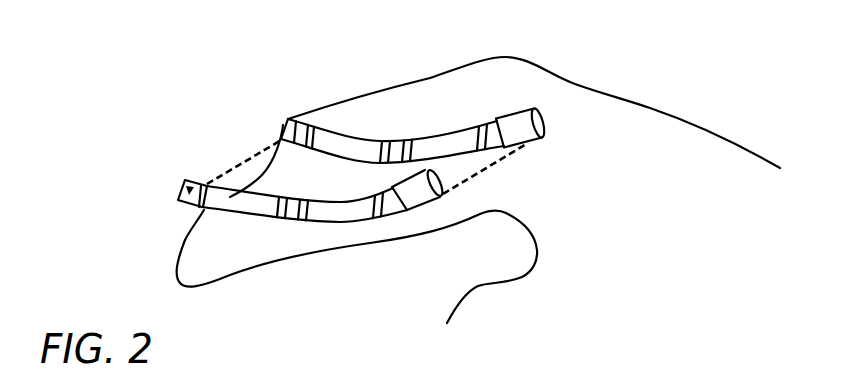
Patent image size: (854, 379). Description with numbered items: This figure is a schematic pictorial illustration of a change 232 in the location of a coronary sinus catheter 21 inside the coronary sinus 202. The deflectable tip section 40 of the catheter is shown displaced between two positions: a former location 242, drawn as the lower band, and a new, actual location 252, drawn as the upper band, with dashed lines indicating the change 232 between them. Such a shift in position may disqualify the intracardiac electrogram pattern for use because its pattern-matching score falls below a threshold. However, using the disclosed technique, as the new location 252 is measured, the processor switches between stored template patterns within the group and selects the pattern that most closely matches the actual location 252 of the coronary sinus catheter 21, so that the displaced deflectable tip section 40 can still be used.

The coronary sinus catheter 21 is at (478, 173).
The coronary sinus 202 is at (368, 278).
The deflectable tip section 40 is at (362, 177).
The former location 242 is at (254, 241).
The new actual location 252 is at (396, 124).
The change in location 232 is at (222, 117).